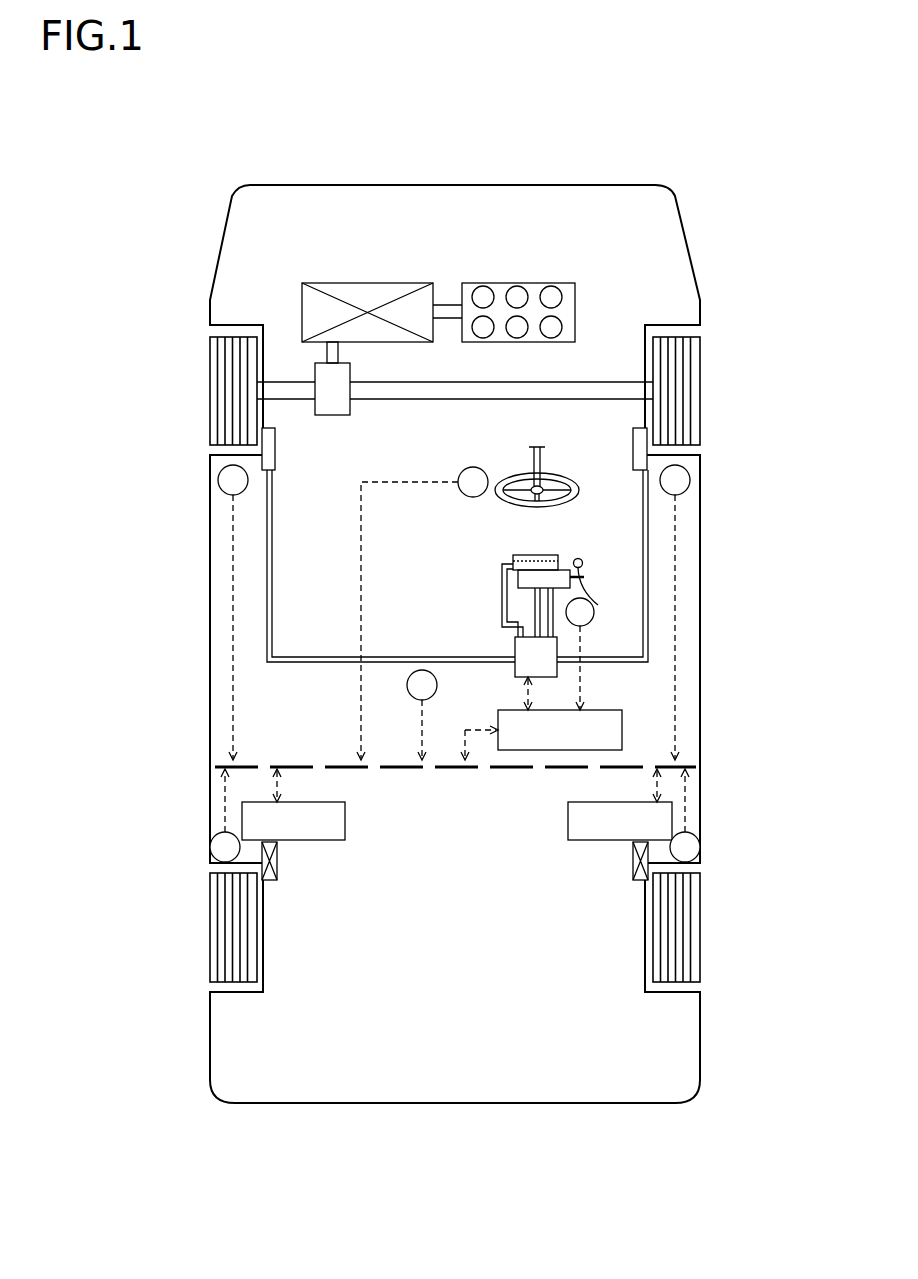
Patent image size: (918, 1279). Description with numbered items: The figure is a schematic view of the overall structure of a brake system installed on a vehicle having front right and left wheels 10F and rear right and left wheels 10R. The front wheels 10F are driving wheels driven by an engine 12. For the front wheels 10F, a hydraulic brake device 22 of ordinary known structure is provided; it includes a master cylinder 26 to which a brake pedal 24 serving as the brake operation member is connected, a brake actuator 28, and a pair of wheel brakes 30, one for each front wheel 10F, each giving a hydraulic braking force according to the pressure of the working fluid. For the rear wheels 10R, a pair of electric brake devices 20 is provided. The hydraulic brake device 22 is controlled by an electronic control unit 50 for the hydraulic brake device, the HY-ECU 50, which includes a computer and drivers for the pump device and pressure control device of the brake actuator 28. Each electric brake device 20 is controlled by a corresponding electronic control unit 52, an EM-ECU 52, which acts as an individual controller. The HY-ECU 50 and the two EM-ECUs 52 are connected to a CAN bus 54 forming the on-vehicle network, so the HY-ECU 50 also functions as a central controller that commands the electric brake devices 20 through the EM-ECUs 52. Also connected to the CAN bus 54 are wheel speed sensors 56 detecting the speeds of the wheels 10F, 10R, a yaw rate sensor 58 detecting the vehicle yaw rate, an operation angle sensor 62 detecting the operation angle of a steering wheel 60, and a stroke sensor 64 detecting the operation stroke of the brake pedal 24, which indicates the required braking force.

The front right and left wheels 10F is at (215, 346).
The rear right and left wheels 10R is at (215, 960).
The engine 12 is at (500, 288).
The electric brake devices 20 is at (284, 864).
The hydraulic brake device 22 is at (445, 571).
The brake pedal 24 is at (591, 594).
The master cylinder 26 is at (528, 576).
The brake actuator 28 is at (520, 649).
The wheel brakes 30 is at (272, 449).
The electronic control unit for the hydraulic brake device (HY-ECU) 50 is at (605, 716).
The electronic control units for the electric brake device (EM-ECUs) 52 is at (338, 822).
The CAN bus 54 is at (443, 772).
The wheel speed sensors 56 is at (218, 479).
The yaw rate sensor 58 is at (437, 683).
The steering wheel 60 is at (517, 470).
The operation angle sensor 62 is at (470, 467).
The stroke sensor 64 is at (590, 623).